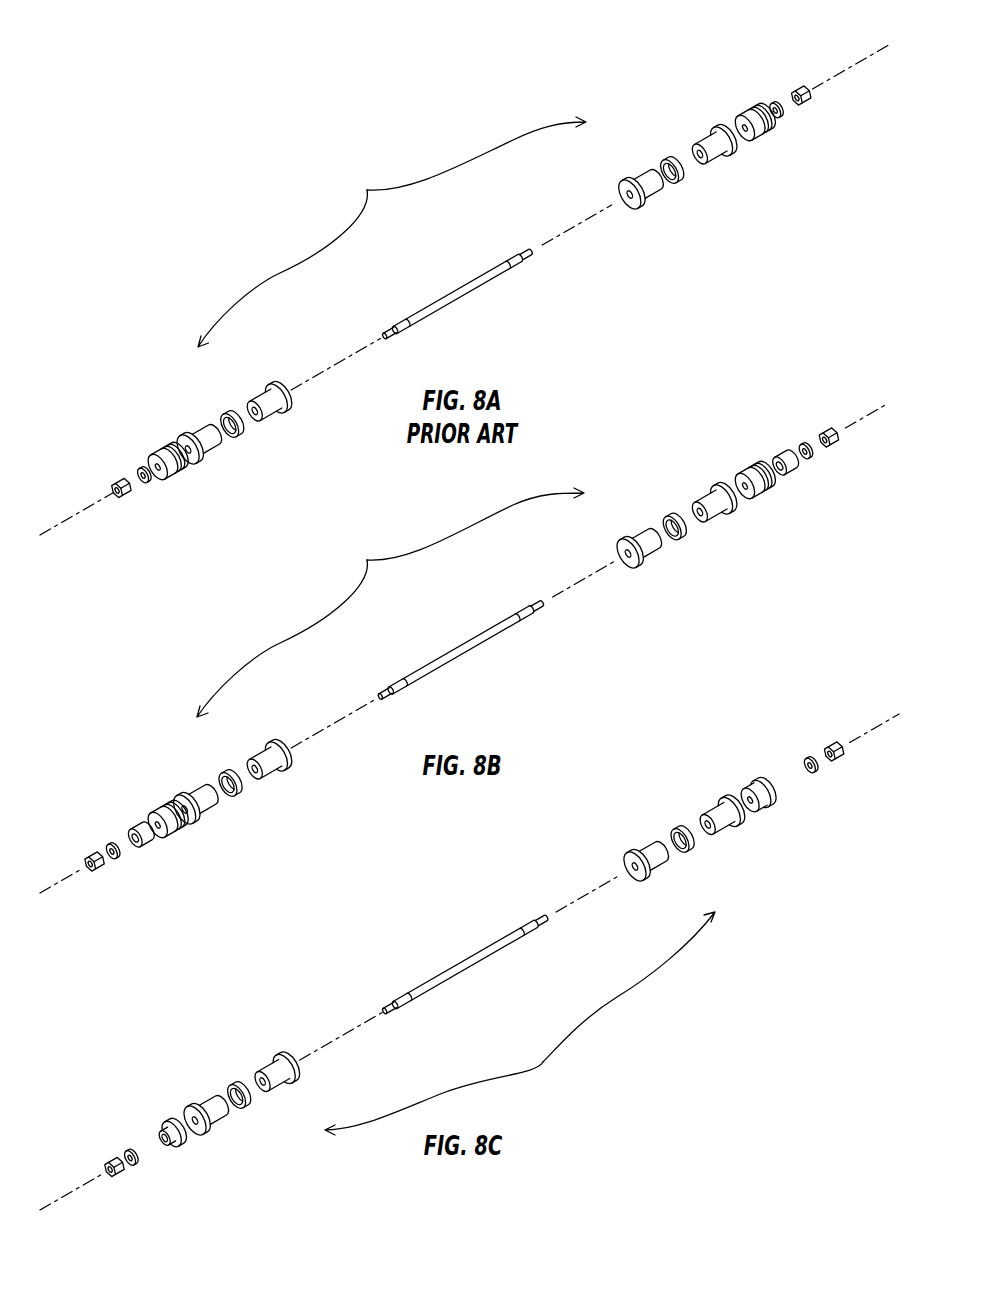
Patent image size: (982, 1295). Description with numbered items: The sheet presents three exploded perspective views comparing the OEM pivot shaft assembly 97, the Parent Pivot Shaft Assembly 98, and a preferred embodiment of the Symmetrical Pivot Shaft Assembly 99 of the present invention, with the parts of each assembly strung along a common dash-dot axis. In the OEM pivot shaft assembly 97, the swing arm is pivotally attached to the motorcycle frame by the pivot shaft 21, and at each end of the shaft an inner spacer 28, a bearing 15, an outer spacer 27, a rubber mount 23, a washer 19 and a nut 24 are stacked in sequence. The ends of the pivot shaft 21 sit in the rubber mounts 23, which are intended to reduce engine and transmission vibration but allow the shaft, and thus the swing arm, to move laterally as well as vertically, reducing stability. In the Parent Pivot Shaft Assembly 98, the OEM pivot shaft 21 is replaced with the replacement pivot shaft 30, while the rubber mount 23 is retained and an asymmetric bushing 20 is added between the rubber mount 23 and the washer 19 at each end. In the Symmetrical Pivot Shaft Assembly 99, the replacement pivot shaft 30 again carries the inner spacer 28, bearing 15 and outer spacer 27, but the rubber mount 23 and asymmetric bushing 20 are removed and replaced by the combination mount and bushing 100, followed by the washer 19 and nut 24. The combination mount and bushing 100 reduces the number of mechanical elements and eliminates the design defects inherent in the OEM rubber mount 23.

In FIG. 8A, the bearing 15 is at (242, 432).
In FIG. 8B, the bearing 15 is at (245, 792).
In FIG. 8C, the bearing 15 is at (250, 1092).
In FIG. 8A, the washer 19 is at (143, 470).
In FIG. 8B, the washer 19 is at (118, 858).
In FIG. 8C, the washer 19 is at (133, 1147).
In FIG. 8B, the asymmetric bushing 20 is at (138, 837).
In FIG. 8A, the pivot shaft 21 is at (467, 283).
In FIG. 8A, the rubber mount 23 is at (173, 472).
In FIG. 8B, the rubber mount 23 is at (177, 830).
In FIG. 8A, the nut 24 is at (125, 495).
In FIG. 8B, the nut 24 is at (90, 862).
In FIG. 8C, the nut 24 is at (117, 1163).
In FIG. 8A, the outer spacer 27 is at (205, 437).
In FIG. 8B, the outer spacer 27 is at (207, 792).
In FIG. 8C, the outer spacer 27 is at (212, 1088).
In FIG. 8A, the inner spacer 28 is at (260, 397).
In FIG. 8B, the inner spacer 28 is at (270, 750).
In FIG. 8C, the inner spacer 28 is at (272, 1050).
In FIG. 8B, the replacement pivot shaft 30 is at (465, 645).
In FIG. 8C, the replacement pivot shaft 30 is at (485, 945).
In FIG. 8A, the OEM pivot shaft assembly 97 is at (367, 190).
In FIG. 8B, the Parent Pivot Shaft Assembly 98 is at (367, 560).
In FIG. 8C, the Symmetrical Pivot Shaft Assembly 99 is at (543, 1062).
In FIG. 8C, the combination mount and bushing 100 is at (188, 1133).